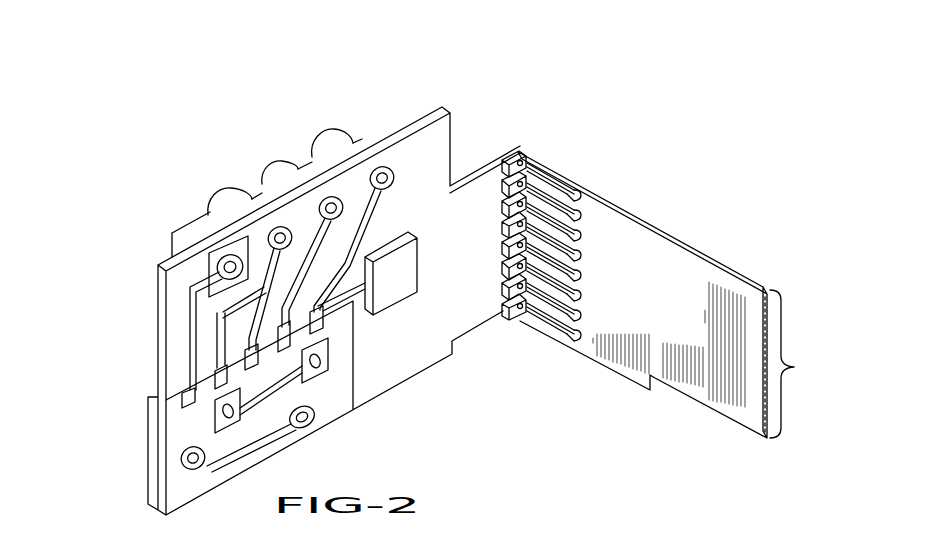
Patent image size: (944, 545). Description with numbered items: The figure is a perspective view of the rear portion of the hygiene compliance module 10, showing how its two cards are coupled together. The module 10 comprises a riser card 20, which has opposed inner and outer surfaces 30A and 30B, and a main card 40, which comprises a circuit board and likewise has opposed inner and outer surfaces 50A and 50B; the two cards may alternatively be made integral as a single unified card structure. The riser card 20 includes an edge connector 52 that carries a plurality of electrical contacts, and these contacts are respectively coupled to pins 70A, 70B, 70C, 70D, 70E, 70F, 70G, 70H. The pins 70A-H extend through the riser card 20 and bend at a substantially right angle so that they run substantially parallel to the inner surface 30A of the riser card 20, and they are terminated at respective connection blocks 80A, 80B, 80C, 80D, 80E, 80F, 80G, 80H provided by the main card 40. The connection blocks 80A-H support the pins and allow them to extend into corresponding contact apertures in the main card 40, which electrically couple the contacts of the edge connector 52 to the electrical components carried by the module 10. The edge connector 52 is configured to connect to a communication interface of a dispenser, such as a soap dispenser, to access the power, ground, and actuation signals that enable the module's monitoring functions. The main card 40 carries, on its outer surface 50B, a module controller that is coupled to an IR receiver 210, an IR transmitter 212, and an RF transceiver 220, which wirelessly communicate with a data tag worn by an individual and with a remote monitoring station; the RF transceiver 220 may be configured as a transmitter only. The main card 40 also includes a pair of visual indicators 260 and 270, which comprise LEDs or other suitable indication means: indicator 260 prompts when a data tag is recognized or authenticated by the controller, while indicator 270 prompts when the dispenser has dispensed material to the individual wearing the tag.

The hygiene compliance module 10 is at (117, 160).
The riser card 20 is at (652, 208).
The inner surface of riser card 30A is at (700, 393).
The outer surface of riser card 30B is at (670, 230).
The main card 40 is at (437, 102).
The inner surface of main card 50A is at (373, 377).
The outer surface of main card 50B is at (400, 132).
The edge connector 52 is at (801, 364).
The pin 70A is at (541, 322).
The pin 70B is at (563, 320).
The pin 70C is at (582, 300).
The pin 70D is at (580, 276).
The pin 70E is at (582, 254).
The pin 70F is at (577, 234).
The pin 70G is at (546, 195).
The pin 70H is at (531, 172).
The connection block 80A is at (503, 319).
The connection block 80B is at (502, 297).
The connection block 80C is at (502, 276).
The connection block 80D is at (502, 255).
The connection block 80E is at (502, 238).
The connection block 80F is at (501, 208).
The connection block 80G is at (506, 183).
The connection block 80H is at (514, 157).
The IR receiver 210 is at (190, 240).
The IR transmitter 212 is at (333, 147).
The RF transceiver 220 is at (403, 272).
The visual indicator 260 is at (282, 173).
The visual indicator 270 is at (232, 205).